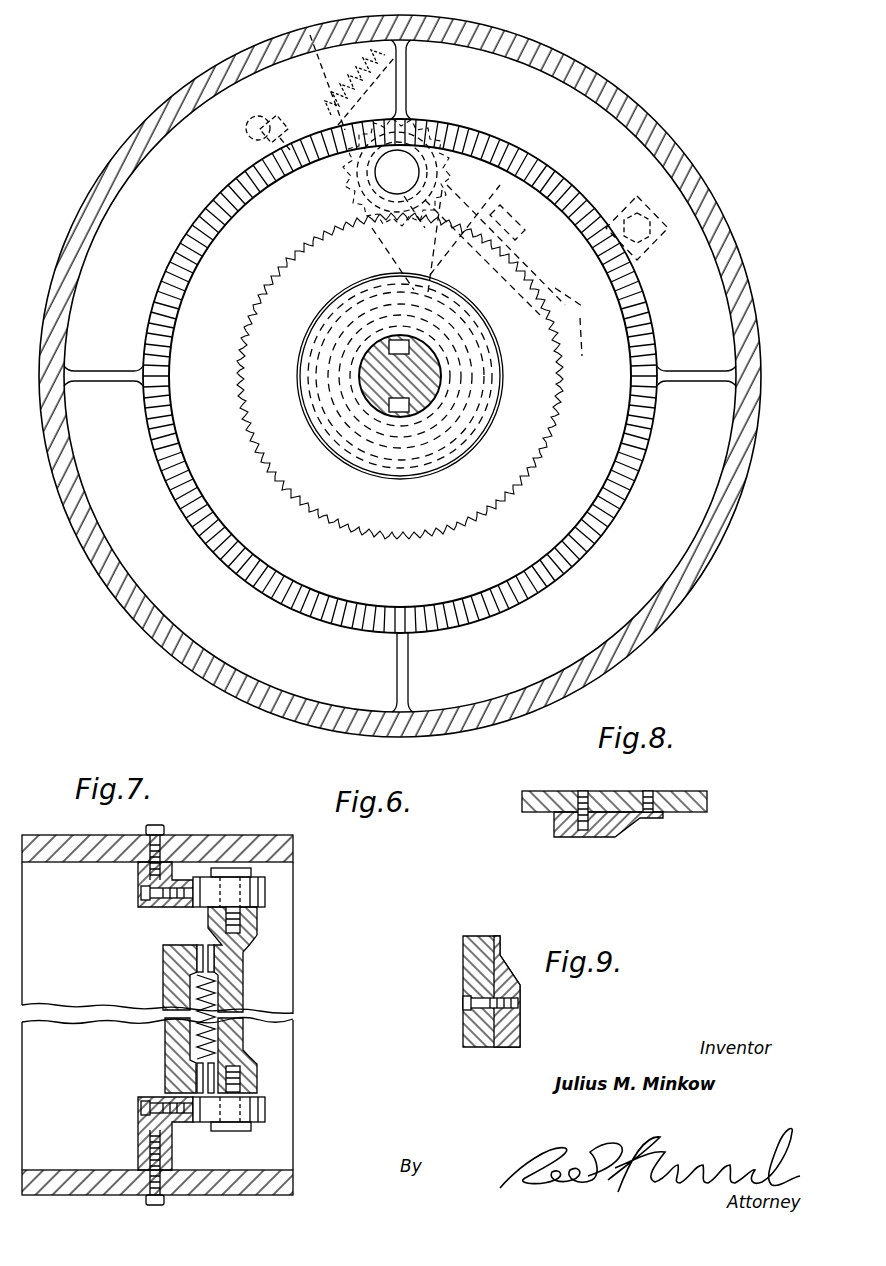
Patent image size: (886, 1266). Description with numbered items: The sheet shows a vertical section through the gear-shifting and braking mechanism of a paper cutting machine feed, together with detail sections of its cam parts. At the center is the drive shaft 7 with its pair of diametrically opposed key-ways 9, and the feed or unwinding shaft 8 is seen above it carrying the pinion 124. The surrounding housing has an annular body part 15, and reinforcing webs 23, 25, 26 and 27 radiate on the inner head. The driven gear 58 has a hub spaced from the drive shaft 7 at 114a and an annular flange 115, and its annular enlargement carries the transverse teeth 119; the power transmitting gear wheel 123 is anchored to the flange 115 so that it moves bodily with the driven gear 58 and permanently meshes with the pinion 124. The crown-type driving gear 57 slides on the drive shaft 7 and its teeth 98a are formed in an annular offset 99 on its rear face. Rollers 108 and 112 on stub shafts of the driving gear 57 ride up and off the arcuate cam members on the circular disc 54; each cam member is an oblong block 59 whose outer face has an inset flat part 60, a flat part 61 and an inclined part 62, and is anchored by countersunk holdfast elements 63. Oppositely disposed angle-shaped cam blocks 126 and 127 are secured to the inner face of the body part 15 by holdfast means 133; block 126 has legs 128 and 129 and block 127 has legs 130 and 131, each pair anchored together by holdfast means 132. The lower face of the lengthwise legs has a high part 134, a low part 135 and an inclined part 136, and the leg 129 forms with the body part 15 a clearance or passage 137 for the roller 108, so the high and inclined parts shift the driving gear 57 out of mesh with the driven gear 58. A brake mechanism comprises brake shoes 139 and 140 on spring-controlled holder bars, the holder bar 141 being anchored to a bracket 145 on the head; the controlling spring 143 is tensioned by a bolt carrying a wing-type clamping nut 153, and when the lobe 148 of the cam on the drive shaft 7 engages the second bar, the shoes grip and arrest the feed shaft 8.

In FIG. 6, the drive shaft 7 is at (375, 382).
In FIG. 6, the feed or unwinding shaft 8 is at (345, 199).
In FIG. 6, the key-ways 9 is at (385, 343).
In FIG. 6, the annular body part 15 is at (632, 106).
In FIG. 6, the reinforcing web 23 is at (407, 74).
In FIG. 6, the reinforcing web 25 is at (409, 670).
In FIG. 6, the reinforcing web 26 is at (100, 384).
In FIG. 6, the reinforcing web 27 is at (685, 384).
In FIG. 8, the circular disc 54 is at (608, 797).
In FIG. 7, the driving gear 57 is at (238, 995).
In FIG. 6, the driven gear 58 is at (192, 418).
In FIG. 7, the driven gear 58 is at (163, 998).
In FIG. 8, the oblong block 59 is at (612, 824).
In FIG. 8, the flat part 60 is at (655, 818).
In FIG. 8, the flat part 61 is at (572, 838).
In FIG. 8, the inclined part 62 is at (628, 828).
In FIG. 8, the holdfast elements 63 is at (651, 796).
In FIG. 7, the teeth 98a is at (214, 958).
In FIG. 7, the annular offset 99 is at (220, 967).
In FIG. 7, the roller 108 is at (266, 890).
In FIG. 7, the roller 112 is at (266, 1110).
In FIG. 6, the space 114a is at (430, 412).
In FIG. 6, the annular flange 115 is at (480, 431).
In FIG. 6, the teeth 119 is at (166, 291).
In FIG. 7, the teeth 119 is at (200, 946).
In FIG. 6, the power transmitting gear wheel 123 is at (290, 252).
In FIG. 6, the pinion 124 is at (500, 146).
In FIG. 7, the cam block 126 is at (184, 1158).
In FIG. 7, the cam block 127 is at (128, 883).
In FIG. 7, the leg 128 is at (156, 1125).
In FIG. 7, the leg 129 is at (180, 1125).
In FIG. 7, the leg 130 is at (165, 906).
In FIG. 7, the leg 131 is at (182, 878).
In FIG. 7, the holdfast means 132 is at (142, 894).
In FIG. 9, the holdfast means 132 is at (463, 1003).
In FIG. 7, the holdfast means 133 is at (152, 846).
In FIG. 9, the high part 134 is at (520, 1028).
In FIG. 9, the low part 135 is at (503, 945).
In FIG. 9, the inclined part 136 is at (516, 968).
In FIG. 7, the clearance or passage 137 is at (196, 1152).
In FIG. 6, the brake shoe 139 is at (542, 170).
In FIG. 6, the brake shoe 140 is at (378, 260).
In FIG. 6, the holder bar 141 is at (581, 330).
In FIG. 6, the controlling spring 143 is at (306, 30).
In FIG. 6, the bracket 145 is at (650, 262).
In FIG. 6, the lobe 148 is at (350, 400).
In FIG. 6, the clamping nut 153 is at (248, 129).